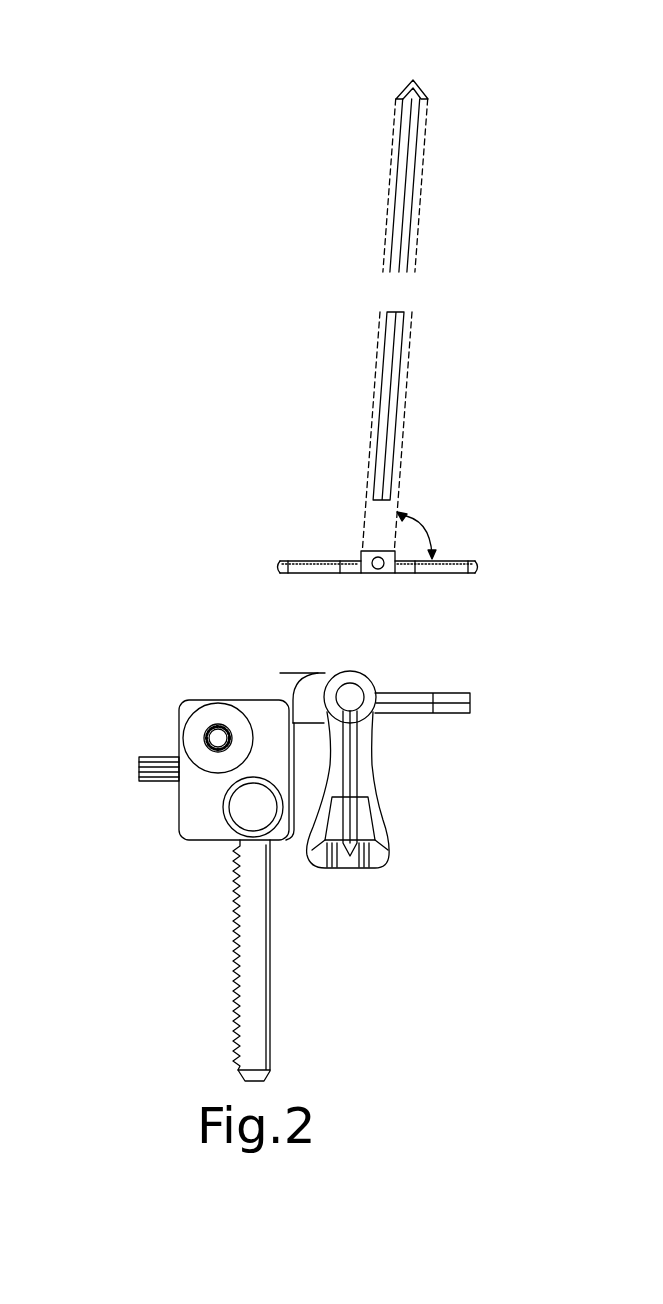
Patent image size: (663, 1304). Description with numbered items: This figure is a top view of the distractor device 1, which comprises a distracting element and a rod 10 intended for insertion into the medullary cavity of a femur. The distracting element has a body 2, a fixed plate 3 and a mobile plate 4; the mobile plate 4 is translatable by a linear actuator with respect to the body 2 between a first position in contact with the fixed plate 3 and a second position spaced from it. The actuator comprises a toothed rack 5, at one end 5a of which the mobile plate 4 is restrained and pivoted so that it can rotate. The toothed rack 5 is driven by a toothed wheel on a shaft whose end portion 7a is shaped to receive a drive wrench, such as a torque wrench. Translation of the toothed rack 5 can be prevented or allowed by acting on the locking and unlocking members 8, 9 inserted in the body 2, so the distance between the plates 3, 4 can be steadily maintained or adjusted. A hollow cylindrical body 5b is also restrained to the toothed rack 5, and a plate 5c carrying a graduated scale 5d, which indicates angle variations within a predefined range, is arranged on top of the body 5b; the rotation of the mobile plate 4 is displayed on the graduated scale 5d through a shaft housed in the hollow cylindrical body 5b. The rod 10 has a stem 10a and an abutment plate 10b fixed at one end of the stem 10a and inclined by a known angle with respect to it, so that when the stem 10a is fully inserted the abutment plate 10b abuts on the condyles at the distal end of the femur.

The distractor device 1 is at (92, 493).
The body 2 is at (190, 710).
The fixed plate 3 is at (455, 716).
The mobile plate 4 is at (448, 698).
The toothed rack 5 is at (245, 975).
The end of toothed rack 5a is at (275, 690).
The hollow cylindrical body 5b is at (322, 682).
The plate 5c is at (373, 830).
The graduated scale 5d is at (363, 868).
The end portion 7a is at (226, 728).
The locking member 8 is at (147, 757).
The unlocking member 9 is at (240, 815).
The rod 10 is at (347, 310).
The stem 10a is at (378, 443).
The abutment plate 10b is at (303, 570).